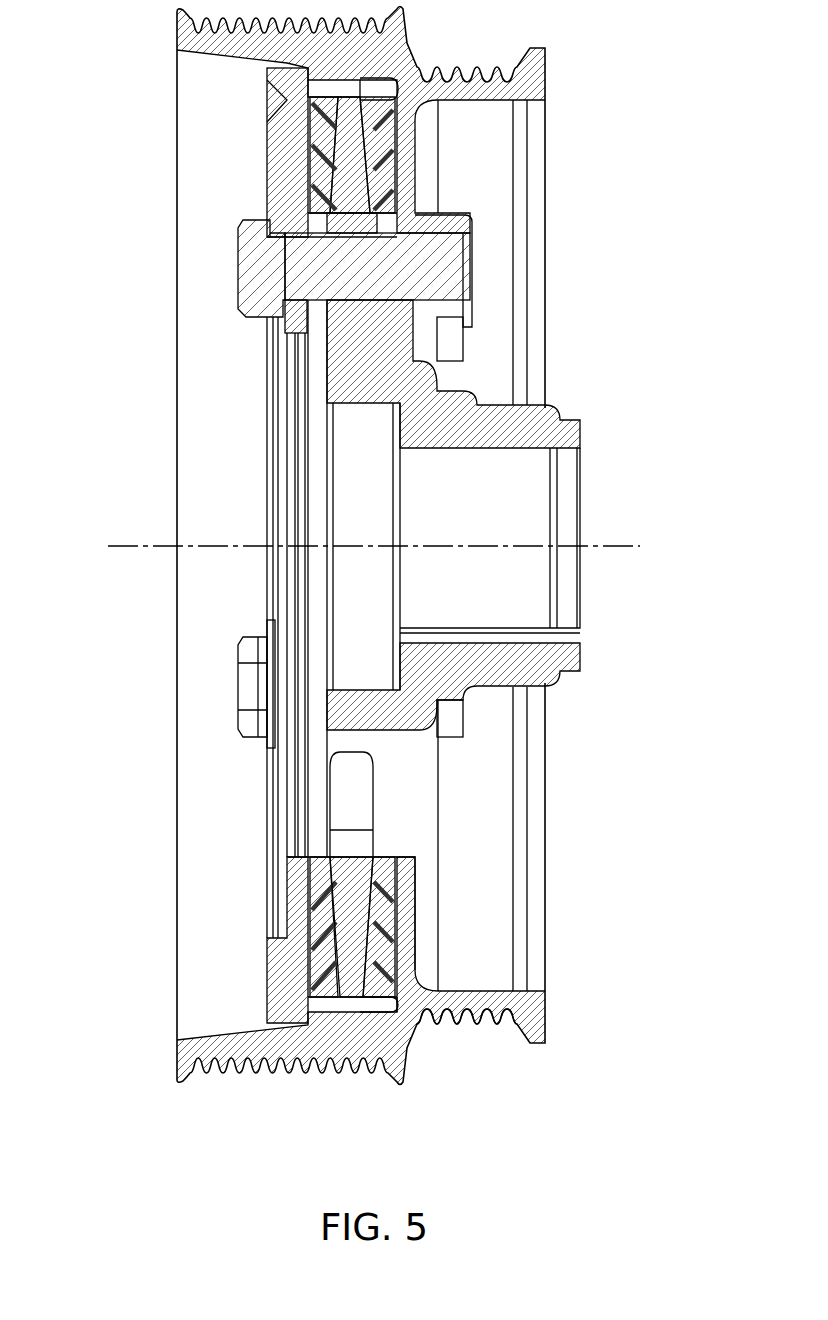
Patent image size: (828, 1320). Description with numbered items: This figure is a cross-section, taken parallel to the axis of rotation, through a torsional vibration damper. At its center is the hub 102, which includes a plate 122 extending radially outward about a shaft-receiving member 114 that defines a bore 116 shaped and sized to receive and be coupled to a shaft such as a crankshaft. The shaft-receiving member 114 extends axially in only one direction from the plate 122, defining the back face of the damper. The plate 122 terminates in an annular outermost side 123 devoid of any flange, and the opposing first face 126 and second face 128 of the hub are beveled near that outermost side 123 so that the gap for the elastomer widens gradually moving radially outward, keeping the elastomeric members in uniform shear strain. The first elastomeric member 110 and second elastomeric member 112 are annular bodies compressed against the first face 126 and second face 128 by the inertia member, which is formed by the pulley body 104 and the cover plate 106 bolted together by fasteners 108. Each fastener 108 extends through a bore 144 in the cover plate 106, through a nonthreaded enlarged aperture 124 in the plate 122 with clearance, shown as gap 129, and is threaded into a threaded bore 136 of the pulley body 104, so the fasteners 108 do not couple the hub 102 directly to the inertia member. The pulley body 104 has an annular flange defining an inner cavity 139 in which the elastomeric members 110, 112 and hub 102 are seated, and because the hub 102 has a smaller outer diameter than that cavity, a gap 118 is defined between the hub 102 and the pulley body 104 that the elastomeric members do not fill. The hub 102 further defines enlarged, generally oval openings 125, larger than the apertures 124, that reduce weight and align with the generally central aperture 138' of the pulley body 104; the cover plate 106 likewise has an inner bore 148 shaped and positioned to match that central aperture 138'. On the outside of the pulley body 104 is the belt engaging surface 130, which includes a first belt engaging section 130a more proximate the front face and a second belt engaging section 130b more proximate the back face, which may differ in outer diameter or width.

The hub 102 is at (580, 436).
The pulley body 104 is at (537, 1022).
The cover plate 106 is at (275, 978).
The fasteners 108 is at (245, 272).
The first elastomeric member 110 is at (315, 162).
The second elastomeric member 112 is at (390, 153).
The shaft-receiving member 114 is at (538, 680).
The bore 116 is at (540, 643).
The gap 118 is at (388, 101).
The plate 122 is at (320, 905).
The annular outermost side 123 is at (353, 997).
The apertures 124 is at (330, 230).
The enlarged openings 125 is at (343, 765).
The first face 126 is at (380, 918).
The second face 128 is at (335, 940).
The gap 129 is at (360, 298).
The belt engaging surface 130 is at (172, 1108).
The first belt engaging section 130a is at (247, 1075).
The second belt engaging section 130b is at (505, 1025).
The threaded bore 136 is at (445, 288).
The central aperture 138' is at (446, 913).
The inner cavity 139 is at (380, 1005).
The bore 144 is at (300, 300).
The inner bore 148 is at (298, 340).